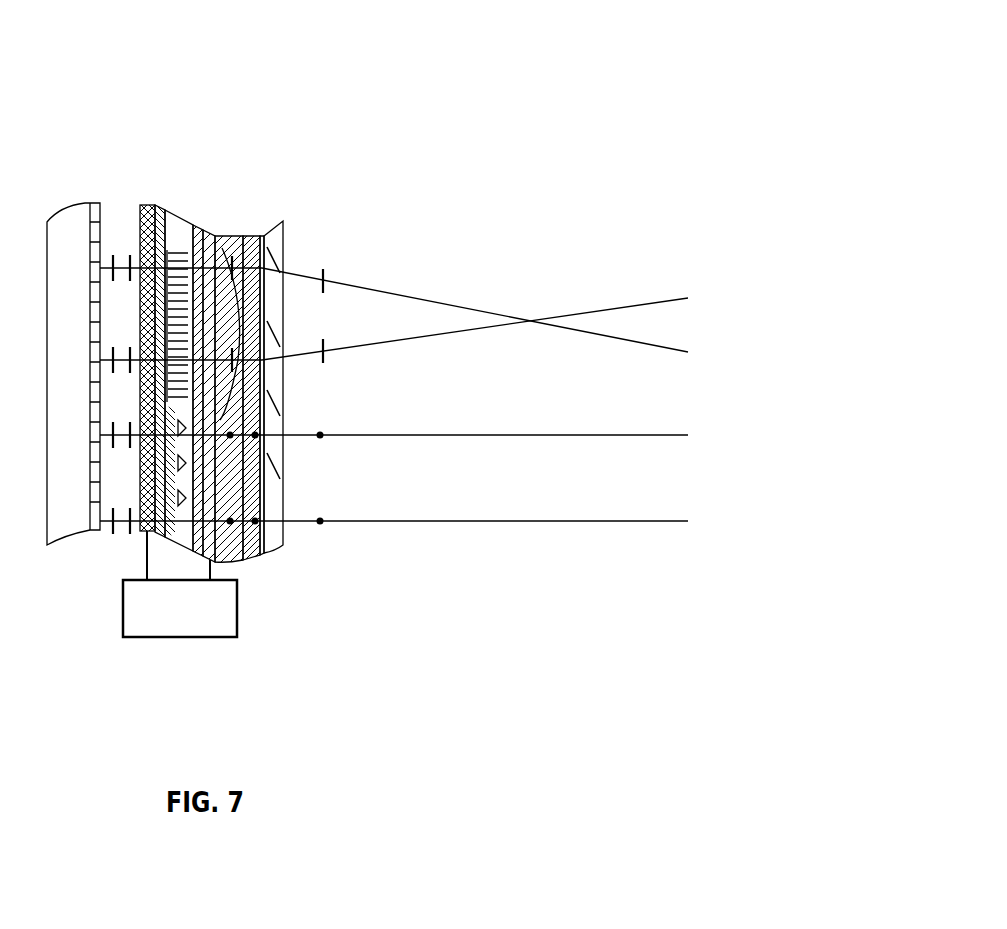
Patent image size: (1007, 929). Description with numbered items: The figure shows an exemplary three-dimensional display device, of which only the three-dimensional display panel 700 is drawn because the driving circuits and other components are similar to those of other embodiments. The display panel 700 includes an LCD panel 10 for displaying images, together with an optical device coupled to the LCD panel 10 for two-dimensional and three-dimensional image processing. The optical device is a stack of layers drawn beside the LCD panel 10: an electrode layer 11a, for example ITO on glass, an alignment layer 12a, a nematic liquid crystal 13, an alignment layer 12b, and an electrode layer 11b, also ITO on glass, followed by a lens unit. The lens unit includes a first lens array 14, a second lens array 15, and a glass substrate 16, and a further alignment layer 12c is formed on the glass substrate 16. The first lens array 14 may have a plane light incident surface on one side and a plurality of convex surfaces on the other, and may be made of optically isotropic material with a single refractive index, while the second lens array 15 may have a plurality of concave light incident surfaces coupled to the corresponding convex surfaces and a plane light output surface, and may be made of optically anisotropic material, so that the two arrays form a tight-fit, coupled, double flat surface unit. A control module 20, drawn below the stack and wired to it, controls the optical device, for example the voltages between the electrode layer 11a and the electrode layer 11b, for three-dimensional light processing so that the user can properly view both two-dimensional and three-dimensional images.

The 3D display panel 700 is at (272, 31).
The LCD panel 10 is at (90, 203).
The electrode layer 11a is at (157, 200).
The electrode layer 11b is at (208, 232).
The alignment layer 12a is at (165, 210).
The alignment layer 12b is at (197, 227).
The alignment layer 12c is at (263, 236).
The nematic liquid crystal 13 is at (180, 218).
The first lens array 14 is at (227, 236).
The second lens array 15 is at (248, 236).
The glass substrate 16 is at (283, 222).
The control module 20 is at (227, 620).